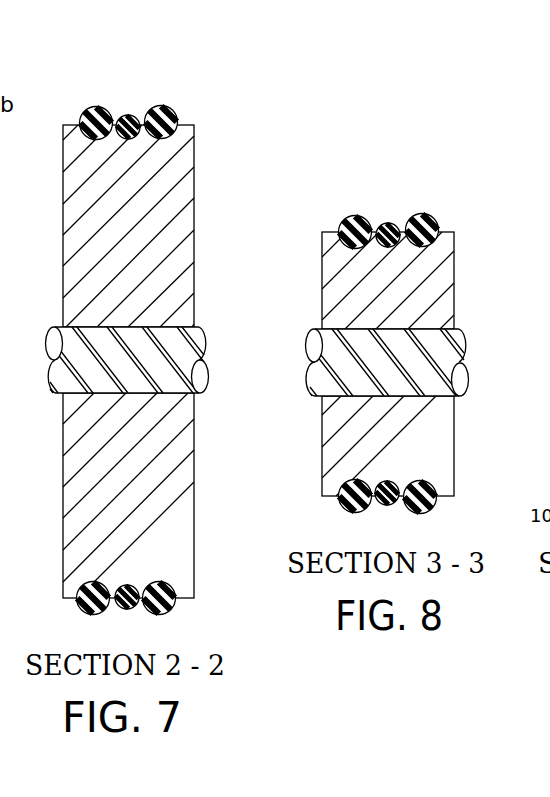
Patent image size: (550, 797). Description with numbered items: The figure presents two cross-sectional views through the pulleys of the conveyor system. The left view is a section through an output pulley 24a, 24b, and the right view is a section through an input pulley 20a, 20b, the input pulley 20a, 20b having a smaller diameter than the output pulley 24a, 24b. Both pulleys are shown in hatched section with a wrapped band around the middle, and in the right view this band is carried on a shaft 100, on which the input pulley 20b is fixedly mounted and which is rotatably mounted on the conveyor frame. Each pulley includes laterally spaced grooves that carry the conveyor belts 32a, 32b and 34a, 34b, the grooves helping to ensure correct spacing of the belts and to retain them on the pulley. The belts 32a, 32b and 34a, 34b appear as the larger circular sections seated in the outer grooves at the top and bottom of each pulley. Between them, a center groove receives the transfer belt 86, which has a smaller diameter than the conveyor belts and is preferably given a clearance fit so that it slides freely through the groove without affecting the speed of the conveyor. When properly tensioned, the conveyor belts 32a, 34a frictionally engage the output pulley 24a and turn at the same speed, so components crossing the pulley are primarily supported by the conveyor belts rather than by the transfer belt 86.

In FIG. 7, the belt 32a is at (155, 79).
In FIG. 8, the belt 32a is at (416, 182).
In FIG. 7, the belt 32b is at (93, 107).
In FIG. 8, the belt 32b is at (355, 215).
In FIG. 7, the belt 34a is at (212, 107).
In FIG. 8, the belt 34a is at (470, 216).
In FIG. 7, the belt 34b is at (170, 108).
In FIG. 8, the belt 34b is at (430, 214).
In FIG. 7, the transfer belt 86 is at (126, 115).
In FIG. 8, the transfer belt 86 is at (383, 223).
In FIG. 7, the output pulley 24a is at (182, 361).
In FIG. 7, the output pulley 24b is at (187, 163).
In FIG. 8, the input pulley 20a is at (434, 364).
In FIG. 8, the input pulley 20b is at (445, 280).
In FIG. 8, the shaft 100 is at (461, 381).